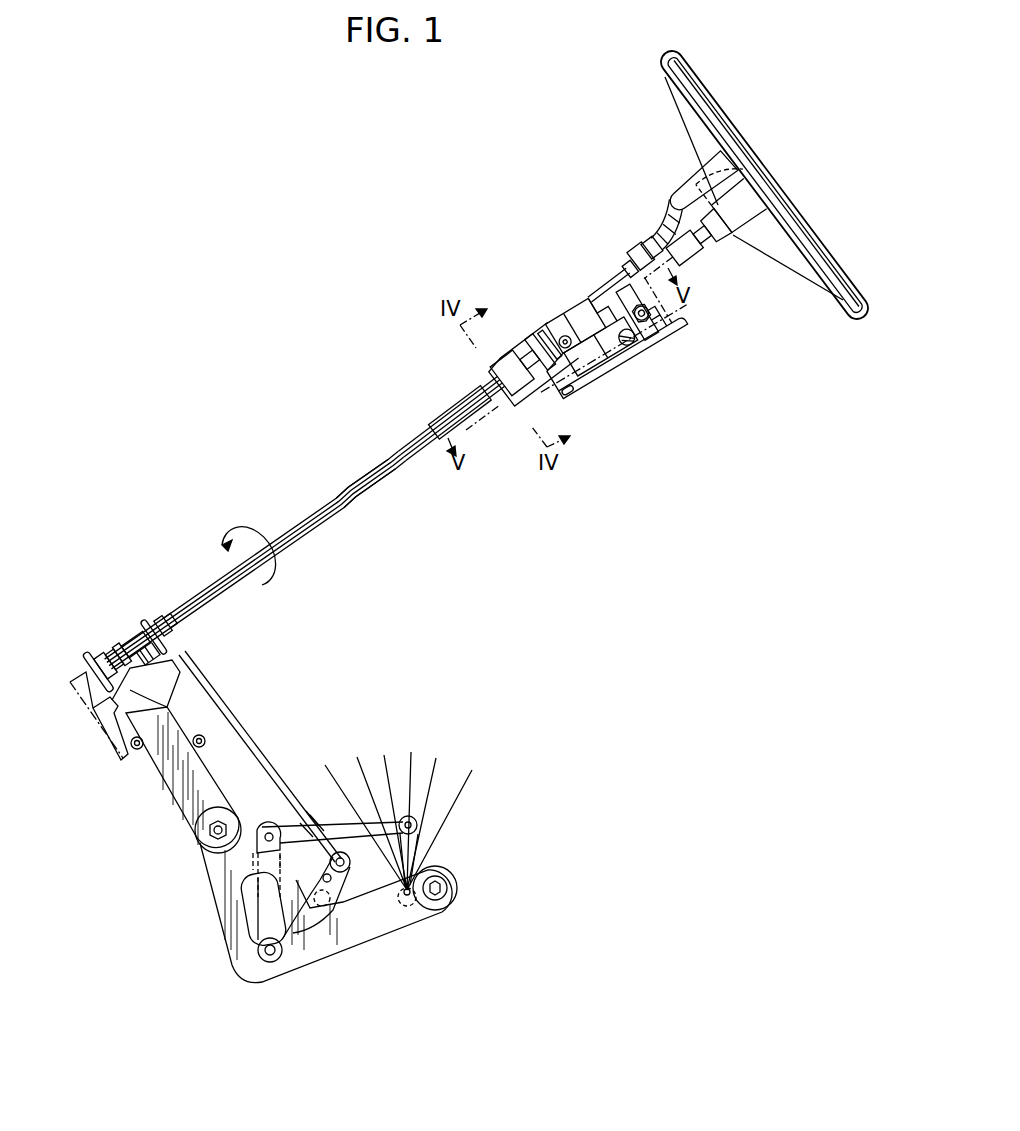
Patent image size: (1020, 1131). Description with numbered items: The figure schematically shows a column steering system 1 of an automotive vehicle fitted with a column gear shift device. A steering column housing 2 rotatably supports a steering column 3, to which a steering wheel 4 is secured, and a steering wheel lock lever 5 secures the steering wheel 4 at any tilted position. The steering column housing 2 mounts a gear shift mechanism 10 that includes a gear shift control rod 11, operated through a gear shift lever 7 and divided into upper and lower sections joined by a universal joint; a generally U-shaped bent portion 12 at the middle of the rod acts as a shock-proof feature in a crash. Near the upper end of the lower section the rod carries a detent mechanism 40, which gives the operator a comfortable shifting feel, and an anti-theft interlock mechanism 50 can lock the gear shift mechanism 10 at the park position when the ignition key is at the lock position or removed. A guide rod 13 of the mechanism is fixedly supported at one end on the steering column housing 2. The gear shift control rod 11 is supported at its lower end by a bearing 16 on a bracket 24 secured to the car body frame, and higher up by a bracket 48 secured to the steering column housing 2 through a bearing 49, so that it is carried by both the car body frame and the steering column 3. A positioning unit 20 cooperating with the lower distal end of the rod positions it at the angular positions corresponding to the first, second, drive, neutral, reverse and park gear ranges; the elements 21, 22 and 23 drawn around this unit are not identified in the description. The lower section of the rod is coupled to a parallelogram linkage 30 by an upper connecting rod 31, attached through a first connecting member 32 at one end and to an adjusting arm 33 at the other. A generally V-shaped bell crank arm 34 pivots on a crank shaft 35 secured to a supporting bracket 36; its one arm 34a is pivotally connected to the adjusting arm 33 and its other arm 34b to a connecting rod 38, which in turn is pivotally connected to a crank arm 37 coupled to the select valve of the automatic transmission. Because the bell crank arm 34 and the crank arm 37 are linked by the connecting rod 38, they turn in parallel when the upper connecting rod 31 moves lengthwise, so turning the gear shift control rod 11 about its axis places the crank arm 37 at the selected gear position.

The steering system 1 is at (777, 152).
The steering column housing 2 is at (566, 303).
The steering column 3 is at (697, 253).
The steering wheel 4 is at (712, 98).
The steering wheel lock lever 5 is at (667, 347).
The gear shift lever 7 is at (687, 193).
The gear shift mechanism 10 is at (604, 257).
The gear shift control rod 11 is at (277, 538).
The U-shaped bent portion 12 is at (385, 492).
The guide rod 13 is at (552, 360).
The bearing 16 is at (104, 663).
The positioning unit 20 is at (121, 610).
The bracket arm 21 is at (140, 680).
The mounting bracket 22 is at (132, 752).
The retainer 23 is at (143, 663).
The bracket 24 is at (160, 772).
The parallelogram linkage 30 is at (330, 735).
The upper connecting rod 31 is at (233, 715).
The first connecting member 32 is at (150, 622).
The adjusting arm 33 is at (344, 883).
The bell crank arm 34 is at (253, 909).
The one arm of bell crank arm 34a is at (300, 953).
The other arm of bell crank arm 34b is at (257, 923).
The crank shaft 35 is at (270, 962).
The supporting bracket 36 is at (378, 945).
The crank arm 37 is at (412, 848).
The connecting rod 38 is at (292, 833).
The detent mechanism 40 is at (507, 352).
The bracket 48 is at (550, 373).
The bearing 49 is at (529, 345).
The interlock mechanism 50 is at (670, 310).